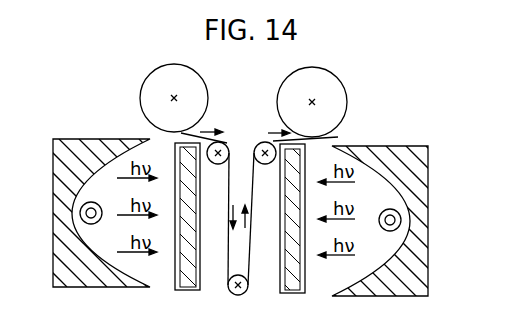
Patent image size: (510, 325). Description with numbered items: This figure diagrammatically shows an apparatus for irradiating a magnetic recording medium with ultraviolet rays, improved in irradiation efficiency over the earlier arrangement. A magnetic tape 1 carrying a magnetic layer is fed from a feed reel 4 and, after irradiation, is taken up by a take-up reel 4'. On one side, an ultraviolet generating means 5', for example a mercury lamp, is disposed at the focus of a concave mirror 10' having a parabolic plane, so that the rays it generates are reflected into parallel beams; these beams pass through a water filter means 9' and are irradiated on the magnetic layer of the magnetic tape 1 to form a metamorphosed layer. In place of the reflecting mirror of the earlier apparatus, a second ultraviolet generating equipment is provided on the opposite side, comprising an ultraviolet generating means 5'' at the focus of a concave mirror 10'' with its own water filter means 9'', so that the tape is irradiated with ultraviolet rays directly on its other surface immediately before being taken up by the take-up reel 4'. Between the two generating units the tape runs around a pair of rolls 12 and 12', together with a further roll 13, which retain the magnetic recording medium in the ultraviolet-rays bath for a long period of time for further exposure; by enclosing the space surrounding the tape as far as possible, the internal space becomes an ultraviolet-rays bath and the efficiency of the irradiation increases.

The magnetic tape 1 is at (225, 246).
The feed reel 4 is at (186, 98).
The take-up reel 4' is at (326, 102).
The ultraviolet generating means 5' is at (97, 200).
The ultraviolet generating means 5'' is at (379, 207).
The water filter means 9' is at (181, 232).
The water filter means 9'' is at (282, 232).
The concave mirror 10' is at (143, 229).
The concave mirror 10'' is at (338, 233).
The roll 12 is at (229, 135).
The roll 12' is at (255, 298).
The roller 13 is at (262, 142).